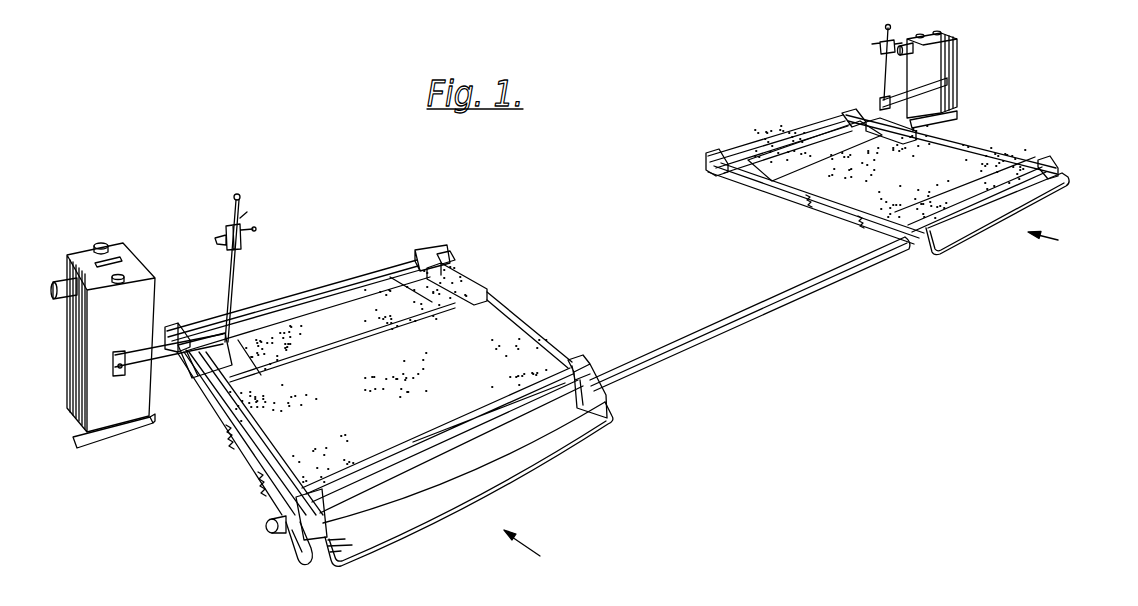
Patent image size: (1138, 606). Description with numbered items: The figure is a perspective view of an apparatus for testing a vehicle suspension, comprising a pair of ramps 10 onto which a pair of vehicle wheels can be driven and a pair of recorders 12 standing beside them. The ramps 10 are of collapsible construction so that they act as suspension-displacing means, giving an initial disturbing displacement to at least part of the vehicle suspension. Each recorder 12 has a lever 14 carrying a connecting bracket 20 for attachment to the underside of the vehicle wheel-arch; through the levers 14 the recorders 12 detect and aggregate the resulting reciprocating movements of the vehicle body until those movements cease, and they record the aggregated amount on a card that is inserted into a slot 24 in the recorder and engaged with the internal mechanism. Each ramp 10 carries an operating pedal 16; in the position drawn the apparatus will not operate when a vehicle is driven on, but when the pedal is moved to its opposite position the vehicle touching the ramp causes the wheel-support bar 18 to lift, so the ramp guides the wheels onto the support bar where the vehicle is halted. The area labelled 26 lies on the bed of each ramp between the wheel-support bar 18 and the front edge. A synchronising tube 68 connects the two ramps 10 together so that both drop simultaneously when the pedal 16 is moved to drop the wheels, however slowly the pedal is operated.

The ramp 10 is at (480, 358).
The recorder 12 is at (92, 338).
The lever 14 is at (138, 352).
The operating pedal 16 is at (290, 540).
The wheel-support bar 18 is at (313, 292).
The connecting bracket 20 is at (248, 238).
The slot 24 is at (105, 262).
The plate 26 is at (342, 318).
The synchronising tube 68 is at (737, 317).